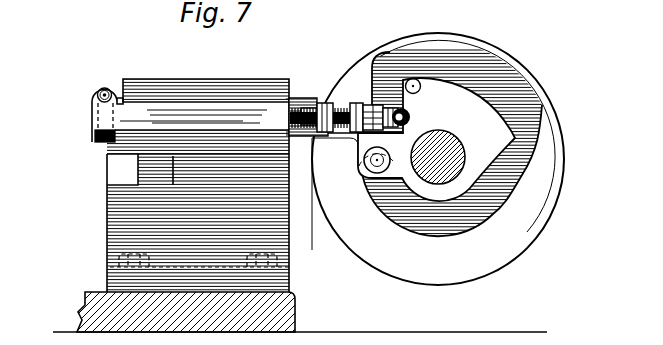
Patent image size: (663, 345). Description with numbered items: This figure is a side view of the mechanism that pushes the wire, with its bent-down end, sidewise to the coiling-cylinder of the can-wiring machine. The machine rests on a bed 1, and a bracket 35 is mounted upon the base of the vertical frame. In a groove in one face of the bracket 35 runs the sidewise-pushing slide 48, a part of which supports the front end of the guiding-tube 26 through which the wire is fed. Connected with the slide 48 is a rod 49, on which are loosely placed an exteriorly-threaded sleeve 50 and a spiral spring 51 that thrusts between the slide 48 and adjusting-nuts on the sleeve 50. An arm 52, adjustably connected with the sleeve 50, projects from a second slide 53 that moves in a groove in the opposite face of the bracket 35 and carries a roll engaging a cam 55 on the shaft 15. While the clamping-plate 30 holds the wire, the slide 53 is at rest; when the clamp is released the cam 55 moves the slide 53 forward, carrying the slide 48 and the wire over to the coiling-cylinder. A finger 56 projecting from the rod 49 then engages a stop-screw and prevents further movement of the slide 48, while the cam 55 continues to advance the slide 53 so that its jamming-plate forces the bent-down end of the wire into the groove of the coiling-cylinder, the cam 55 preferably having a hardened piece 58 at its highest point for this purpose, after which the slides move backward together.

The bed 1 is at (82, 312).
The shaft 15 is at (467, 148).
The guiding-tube 26 is at (93, 97).
The clamping-plate 30 is at (93, 143).
The bracket 35 is at (140, 216).
The sidewise-pushing slide 48 is at (163, 120).
The rod 49 is at (302, 146).
The exteriorly-threaded sleeve 50 is at (354, 102).
The spiral spring 51 is at (319, 102).
The arm 52 is at (364, 107).
The slide 53 is at (294, 99).
The cam 55 is at (500, 212).
The finger 56 is at (388, 111).
The hardened piece 58 is at (503, 52).